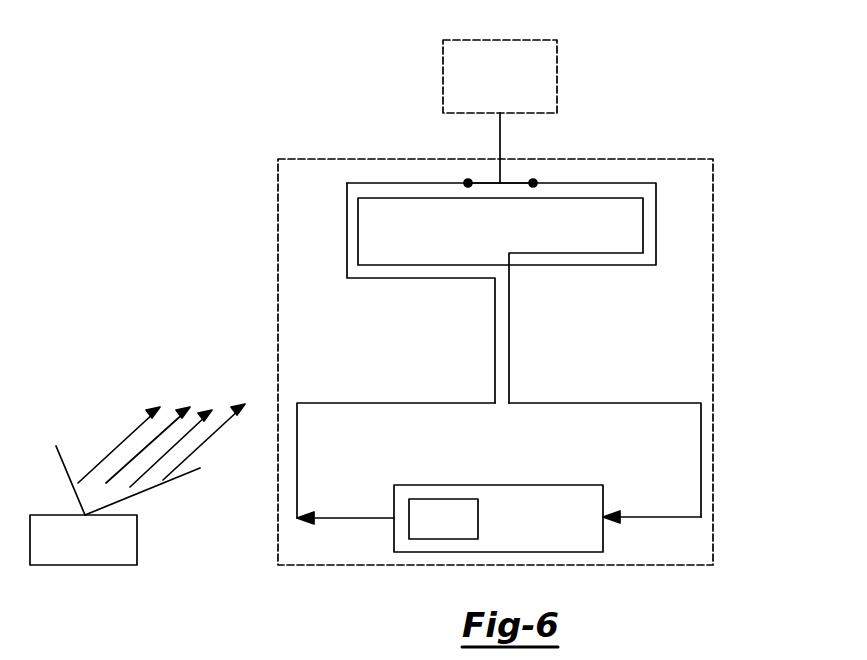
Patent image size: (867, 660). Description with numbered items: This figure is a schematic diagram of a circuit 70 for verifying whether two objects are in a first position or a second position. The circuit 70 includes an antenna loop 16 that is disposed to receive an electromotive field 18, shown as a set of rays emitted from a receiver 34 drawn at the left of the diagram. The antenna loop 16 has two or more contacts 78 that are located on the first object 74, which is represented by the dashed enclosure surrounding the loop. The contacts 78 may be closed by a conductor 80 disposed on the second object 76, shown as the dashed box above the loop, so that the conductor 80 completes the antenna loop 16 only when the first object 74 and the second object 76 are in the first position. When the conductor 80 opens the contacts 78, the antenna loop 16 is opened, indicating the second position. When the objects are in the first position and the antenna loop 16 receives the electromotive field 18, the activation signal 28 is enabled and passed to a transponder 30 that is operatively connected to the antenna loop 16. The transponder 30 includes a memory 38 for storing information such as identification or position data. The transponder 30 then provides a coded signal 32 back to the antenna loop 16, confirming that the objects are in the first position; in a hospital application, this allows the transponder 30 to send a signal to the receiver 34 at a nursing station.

The circuit 70 is at (681, 70).
The first object 74 is at (278, 159).
The second object 76 is at (443, 68).
The contacts 78 is at (533, 183).
The conductor 80 is at (492, 183).
The antenna loop 16 is at (655, 183).
The electromotive field 18 is at (102, 447).
The receiver 34 is at (85, 565).
The coded signal 32 is at (352, 518).
The transponder 30 is at (603, 552).
The memory 38 is at (478, 515).
The activation signal 28 is at (688, 517).